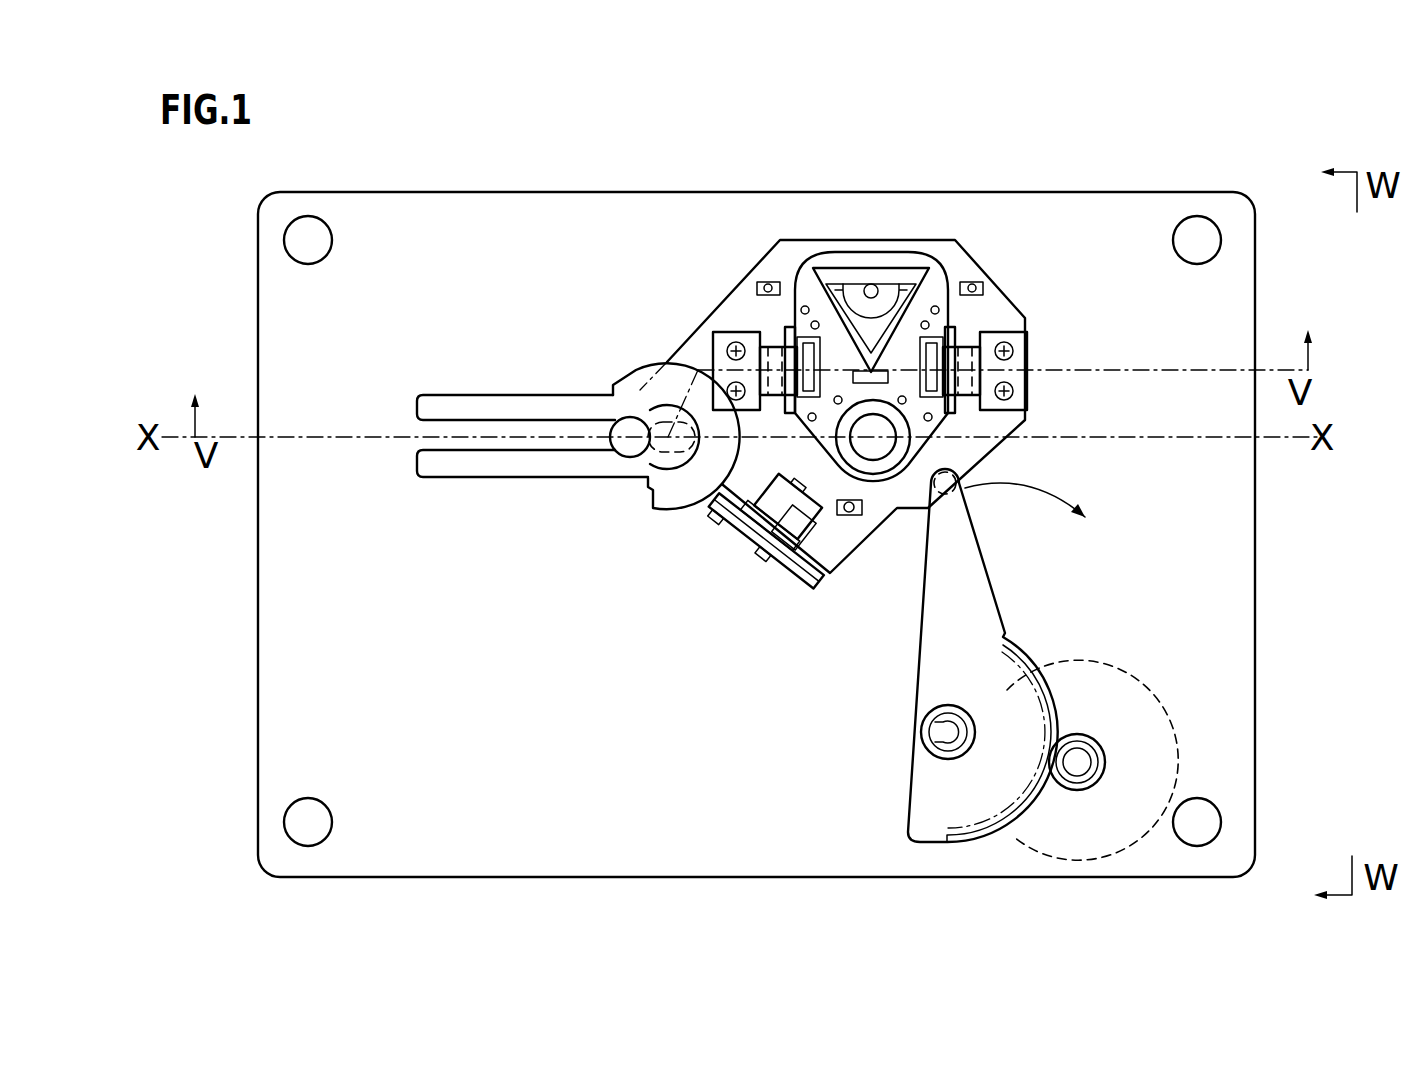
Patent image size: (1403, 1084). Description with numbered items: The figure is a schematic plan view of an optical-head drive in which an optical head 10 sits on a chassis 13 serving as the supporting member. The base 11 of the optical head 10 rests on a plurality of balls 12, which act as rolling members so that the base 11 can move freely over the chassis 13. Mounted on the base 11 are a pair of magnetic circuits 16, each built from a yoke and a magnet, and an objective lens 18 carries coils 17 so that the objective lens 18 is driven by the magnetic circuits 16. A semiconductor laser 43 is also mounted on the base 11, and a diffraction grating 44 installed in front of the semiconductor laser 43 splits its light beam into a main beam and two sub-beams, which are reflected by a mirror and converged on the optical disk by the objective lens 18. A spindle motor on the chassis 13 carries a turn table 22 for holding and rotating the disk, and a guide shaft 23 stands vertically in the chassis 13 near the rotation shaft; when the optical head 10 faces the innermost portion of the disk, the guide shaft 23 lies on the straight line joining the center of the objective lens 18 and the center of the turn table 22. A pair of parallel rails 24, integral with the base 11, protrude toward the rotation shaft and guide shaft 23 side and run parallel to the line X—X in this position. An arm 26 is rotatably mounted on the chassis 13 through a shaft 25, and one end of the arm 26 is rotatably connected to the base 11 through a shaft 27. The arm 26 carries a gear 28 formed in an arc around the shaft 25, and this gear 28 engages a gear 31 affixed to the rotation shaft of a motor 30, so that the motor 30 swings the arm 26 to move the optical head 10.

The optical head 10 is at (829, 228).
The base 11 is at (921, 236).
The balls 12 is at (767, 282).
The chassis 13 is at (1086, 192).
The magnetic circuits 16 is at (775, 350).
The coils 17 is at (806, 303).
The objective lens 18 is at (882, 452).
The turn table 22 is at (631, 383).
The guide shaft 23 is at (632, 449).
The rails 24 is at (456, 412).
The shaft 25 is at (942, 732).
The arm 26 is at (932, 822).
The shaft 27 is at (958, 492).
The gear 28 is at (1010, 827).
The motor 30 is at (1166, 852).
The gear 31 is at (1099, 742).
The semiconductor laser 43 is at (800, 548).
The diffraction grating 44 is at (808, 517).